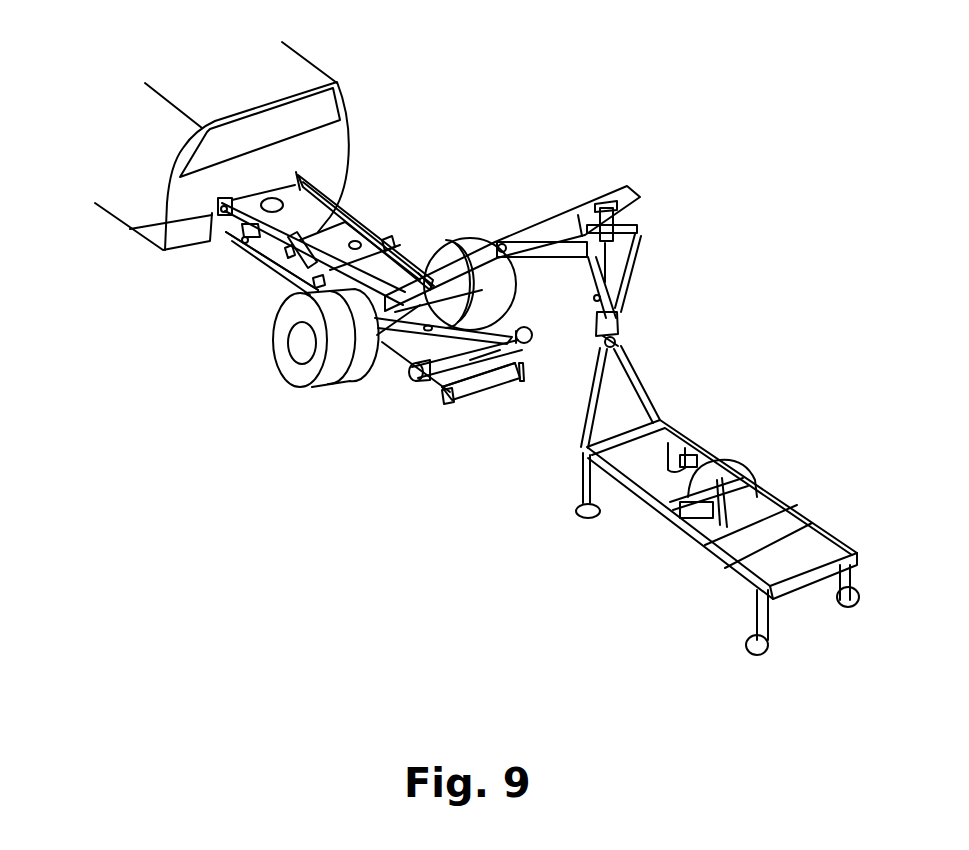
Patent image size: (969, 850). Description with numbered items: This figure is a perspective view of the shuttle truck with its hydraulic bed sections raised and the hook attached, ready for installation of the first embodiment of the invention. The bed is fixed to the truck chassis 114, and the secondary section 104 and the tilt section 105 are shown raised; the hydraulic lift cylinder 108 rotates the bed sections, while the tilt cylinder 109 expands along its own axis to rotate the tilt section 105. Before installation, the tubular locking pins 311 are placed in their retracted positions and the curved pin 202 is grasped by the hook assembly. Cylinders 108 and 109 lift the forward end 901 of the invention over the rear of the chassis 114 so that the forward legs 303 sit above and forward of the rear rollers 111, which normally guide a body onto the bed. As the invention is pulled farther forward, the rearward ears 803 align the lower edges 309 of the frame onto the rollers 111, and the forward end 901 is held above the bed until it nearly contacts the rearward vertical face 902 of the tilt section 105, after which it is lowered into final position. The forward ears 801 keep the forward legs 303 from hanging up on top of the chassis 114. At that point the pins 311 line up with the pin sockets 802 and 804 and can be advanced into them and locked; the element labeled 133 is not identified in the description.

The secondary section 104 is at (558, 212).
The tilt section 105 is at (535, 243).
The hydraulic lift cylinder 108 is at (333, 225).
The tilt cylinder 109 is at (605, 212).
The rear rollers 111 is at (524, 381).
The truck chassis 114 is at (272, 266).
The hitch clevis 133 is at (614, 324).
The curved pin 202 is at (620, 347).
The forward legs 303 is at (860, 557).
The lower edges 309 is at (825, 517).
The locking pins 311 is at (855, 597).
The forward ears 801 is at (212, 230).
The pin socket 802 is at (244, 241).
The rearward ears 803 is at (522, 381).
The pin socket 804 is at (440, 388).
The forward end 901 is at (637, 423).
The rearward vertical face 902 is at (580, 283).